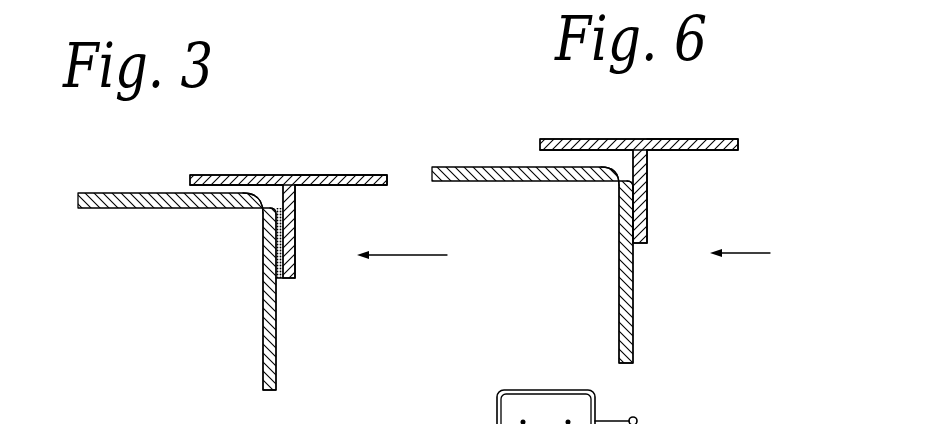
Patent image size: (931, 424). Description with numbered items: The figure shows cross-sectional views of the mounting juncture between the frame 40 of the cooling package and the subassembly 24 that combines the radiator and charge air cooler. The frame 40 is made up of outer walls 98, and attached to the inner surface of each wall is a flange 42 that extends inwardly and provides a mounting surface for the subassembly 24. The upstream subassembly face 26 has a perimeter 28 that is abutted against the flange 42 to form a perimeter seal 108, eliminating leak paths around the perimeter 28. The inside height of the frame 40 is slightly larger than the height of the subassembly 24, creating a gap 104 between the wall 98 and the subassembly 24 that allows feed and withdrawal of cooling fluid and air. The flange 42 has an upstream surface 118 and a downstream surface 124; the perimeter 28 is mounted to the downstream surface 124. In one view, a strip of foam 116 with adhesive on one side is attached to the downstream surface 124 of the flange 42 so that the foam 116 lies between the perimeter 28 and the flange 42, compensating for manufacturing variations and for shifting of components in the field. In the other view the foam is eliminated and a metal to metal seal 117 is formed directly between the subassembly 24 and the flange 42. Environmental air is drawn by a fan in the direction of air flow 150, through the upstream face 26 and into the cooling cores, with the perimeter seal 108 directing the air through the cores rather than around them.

In FIG. 3, the subassembly 24 is at (108, 208).
In FIG. 6, the subassembly 24 is at (583, 181).
In FIG. 3, the upstream subassembly face 26 is at (278, 363).
In FIG. 6, the upstream subassembly face 26 is at (634, 343).
In FIG. 3, the perimeter 28 is at (277, 217).
In FIG. 6, the perimeter 28 is at (636, 196).
In FIG. 3, the frame 40 is at (356, 176).
In FIG. 6, the frame 40 is at (707, 139).
In FIG. 3, the flange 42 is at (291, 243).
In FIG. 6, the flange 42 is at (648, 237).
In FIG. 3, the outer wall 98 is at (250, 176).
In FIG. 6, the outer wall 98 is at (583, 139).
In FIG. 3, the gap 104 is at (212, 184).
In FIG. 6, the gap 104 is at (570, 158).
In FIG. 3, the perimeter seal 108 is at (280, 253).
In FIG. 3, the foam 116 is at (278, 278).
In FIG. 6, the metal to metal seal 117 is at (648, 216).
In FIG. 3, the upstream surface 118 is at (306, 213).
In FIG. 6, the upstream surface 118 is at (648, 178).
In FIG. 3, the downstream surface 124 is at (262, 177).
In FIG. 6, the downstream surface 124 is at (628, 139).
In FIG. 3, the direction of air flow 150 is at (421, 255).
In FIG. 6, the direction of air flow 150 is at (760, 252).